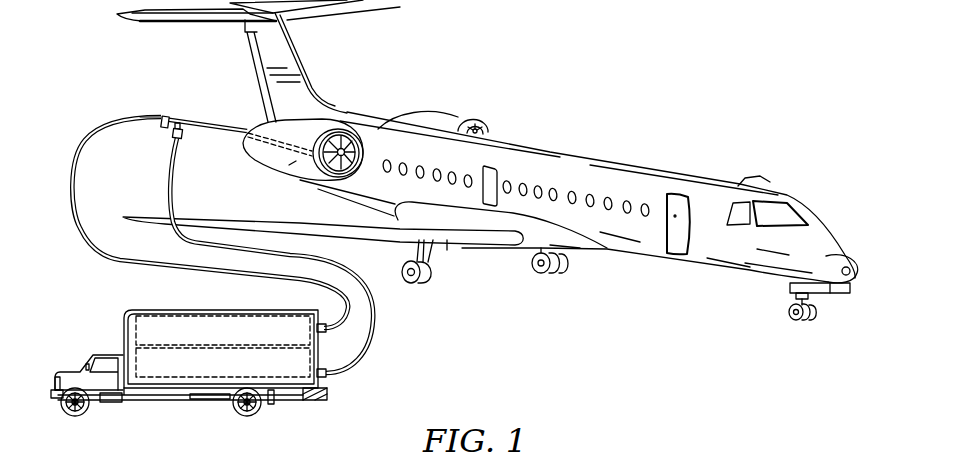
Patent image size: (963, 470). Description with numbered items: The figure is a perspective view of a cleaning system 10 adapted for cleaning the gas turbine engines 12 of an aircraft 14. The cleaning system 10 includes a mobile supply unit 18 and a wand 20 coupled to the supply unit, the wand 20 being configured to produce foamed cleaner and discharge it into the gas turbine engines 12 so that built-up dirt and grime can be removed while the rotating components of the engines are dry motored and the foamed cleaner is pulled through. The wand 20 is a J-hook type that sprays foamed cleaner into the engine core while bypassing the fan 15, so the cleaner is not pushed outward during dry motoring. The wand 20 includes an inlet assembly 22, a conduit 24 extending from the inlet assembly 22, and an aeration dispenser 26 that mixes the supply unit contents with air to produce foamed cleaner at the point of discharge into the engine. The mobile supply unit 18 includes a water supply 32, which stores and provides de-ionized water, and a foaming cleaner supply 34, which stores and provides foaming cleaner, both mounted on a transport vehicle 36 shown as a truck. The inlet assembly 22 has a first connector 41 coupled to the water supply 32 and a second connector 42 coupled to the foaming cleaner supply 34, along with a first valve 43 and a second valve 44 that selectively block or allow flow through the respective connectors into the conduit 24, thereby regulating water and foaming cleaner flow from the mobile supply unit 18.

The cleaning system 10 is at (444, 208).
The gas turbine engine 12 is at (381, 120).
The aircraft 14 is at (487, 160).
The fan 15 is at (354, 152).
The mobile supply unit 18 is at (178, 342).
The wand 20 is at (222, 198).
The inlet assembly 22 is at (160, 109).
The conduit 24 is at (228, 126).
The aeration dispenser 26 is at (304, 156).
The water supply 32 is at (135, 318).
The foaming cleaner supply 34 is at (133, 358).
The transport vehicle 36 is at (55, 378).
The first connector 41 is at (147, 129).
The second connector 42 is at (188, 142).
The first valve 43 is at (163, 134).
The second valve 44 is at (195, 137).